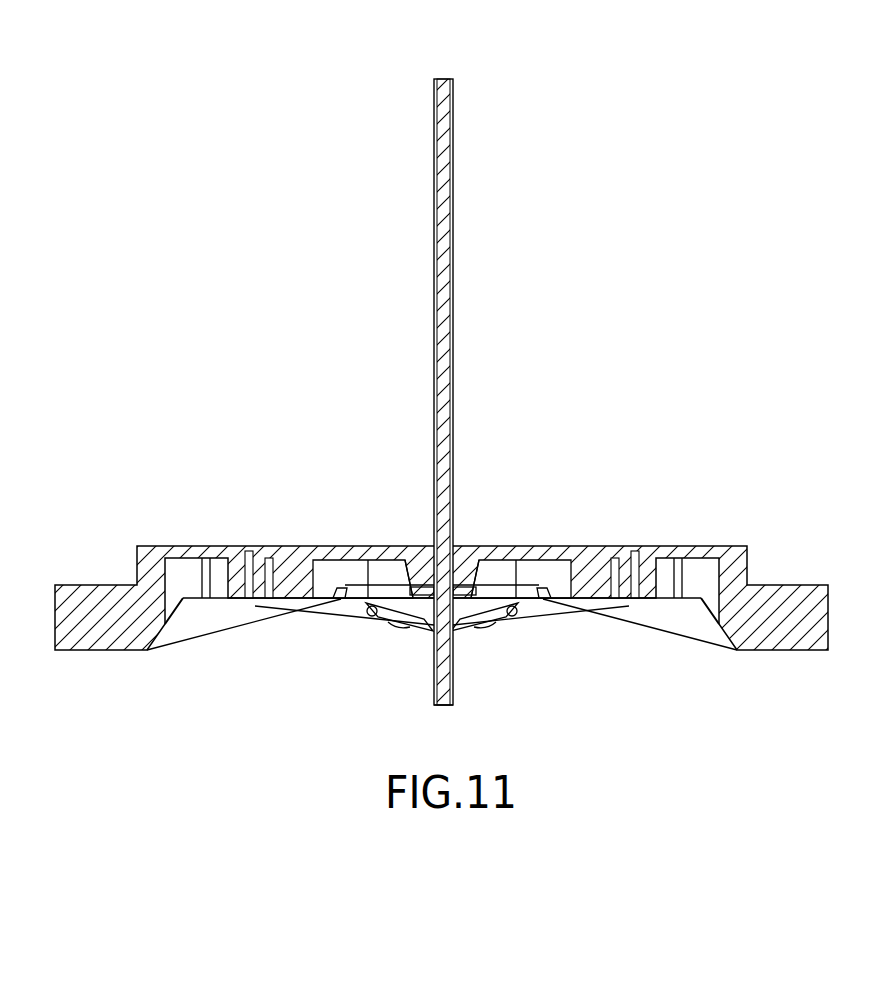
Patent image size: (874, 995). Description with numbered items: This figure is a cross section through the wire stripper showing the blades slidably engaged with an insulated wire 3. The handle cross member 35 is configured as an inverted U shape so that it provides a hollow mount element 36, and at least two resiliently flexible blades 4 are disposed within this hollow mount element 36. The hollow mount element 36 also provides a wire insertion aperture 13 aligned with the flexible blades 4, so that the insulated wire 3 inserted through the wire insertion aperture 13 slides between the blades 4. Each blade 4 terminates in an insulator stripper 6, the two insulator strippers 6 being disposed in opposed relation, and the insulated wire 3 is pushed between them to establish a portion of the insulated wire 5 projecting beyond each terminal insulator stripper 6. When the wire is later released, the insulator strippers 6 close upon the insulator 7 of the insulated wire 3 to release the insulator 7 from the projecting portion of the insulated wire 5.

The insulated wire 3 is at (475, 377).
The resiliently flexible blades 4 is at (362, 615).
The portion of the insulated wire 5 is at (458, 635).
The insulator stripper 6 is at (422, 635).
The insulator 7 is at (450, 463).
The wire insertion aperture 13 is at (457, 560).
The handle cross member 35 is at (746, 546).
The hollow mount element 36 is at (670, 600).